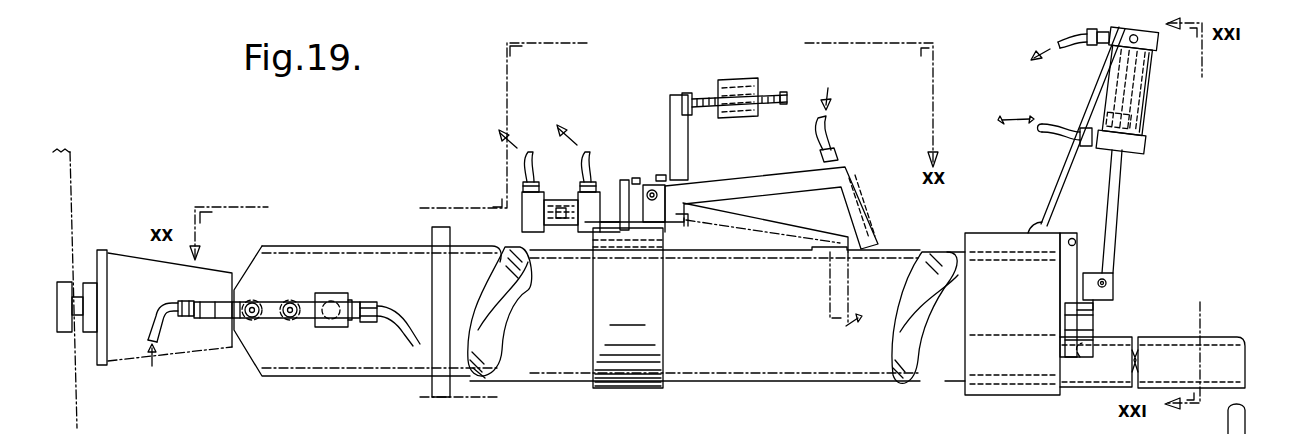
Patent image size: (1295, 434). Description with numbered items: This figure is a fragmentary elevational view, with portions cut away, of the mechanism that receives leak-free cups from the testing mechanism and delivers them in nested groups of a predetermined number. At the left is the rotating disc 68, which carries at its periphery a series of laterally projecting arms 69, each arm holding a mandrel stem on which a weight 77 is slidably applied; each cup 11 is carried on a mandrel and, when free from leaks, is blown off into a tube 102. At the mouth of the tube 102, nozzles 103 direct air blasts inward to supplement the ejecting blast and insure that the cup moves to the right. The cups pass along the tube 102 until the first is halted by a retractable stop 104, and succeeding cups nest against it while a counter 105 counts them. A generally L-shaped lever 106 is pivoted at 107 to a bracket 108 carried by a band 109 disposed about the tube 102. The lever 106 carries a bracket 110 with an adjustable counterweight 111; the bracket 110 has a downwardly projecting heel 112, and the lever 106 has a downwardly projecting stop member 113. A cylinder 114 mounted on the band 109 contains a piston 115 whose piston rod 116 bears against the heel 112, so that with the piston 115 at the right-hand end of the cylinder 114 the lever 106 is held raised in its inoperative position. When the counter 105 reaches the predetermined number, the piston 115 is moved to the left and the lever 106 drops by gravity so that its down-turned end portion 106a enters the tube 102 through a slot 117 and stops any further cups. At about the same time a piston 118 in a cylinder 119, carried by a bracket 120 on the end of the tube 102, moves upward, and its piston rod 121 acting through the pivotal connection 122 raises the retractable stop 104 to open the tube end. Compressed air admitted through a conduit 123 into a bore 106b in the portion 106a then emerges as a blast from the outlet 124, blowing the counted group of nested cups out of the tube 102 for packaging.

The disc 68 is at (74, 182).
The arm 69 is at (62, 266).
The weight 77 is at (106, 364).
The cup 11 is at (132, 347).
The nozzle 103 is at (174, 322).
The counter 105 is at (320, 294).
The tube 102 is at (318, 362).
The retractable stop 104 is at (1072, 321).
The L-shaped lever 106 is at (786, 186).
The down-turned end portion 106a is at (864, 204).
The bore 106b is at (862, 196).
The pivot 107 is at (652, 190).
The bracket 108 is at (668, 232).
The band 109 is at (648, 292).
The bracket 110 is at (676, 118).
The adjustable counterweight 111 is at (745, 86).
The heel 112 is at (628, 188).
The stop member 113 is at (680, 222).
The cylinder 114 is at (540, 212).
The piston 115 is at (565, 232).
The piston rod 116 is at (622, 218).
The slot 117 is at (835, 253).
The piston 118 is at (1112, 121).
The cylinder 119 is at (1148, 93).
The bracket 120 is at (1068, 176).
The piston rod 121 is at (1115, 182).
The pivotal connection 122 is at (1106, 282).
The conduit 123 is at (830, 128).
The outlet 124 is at (880, 238).